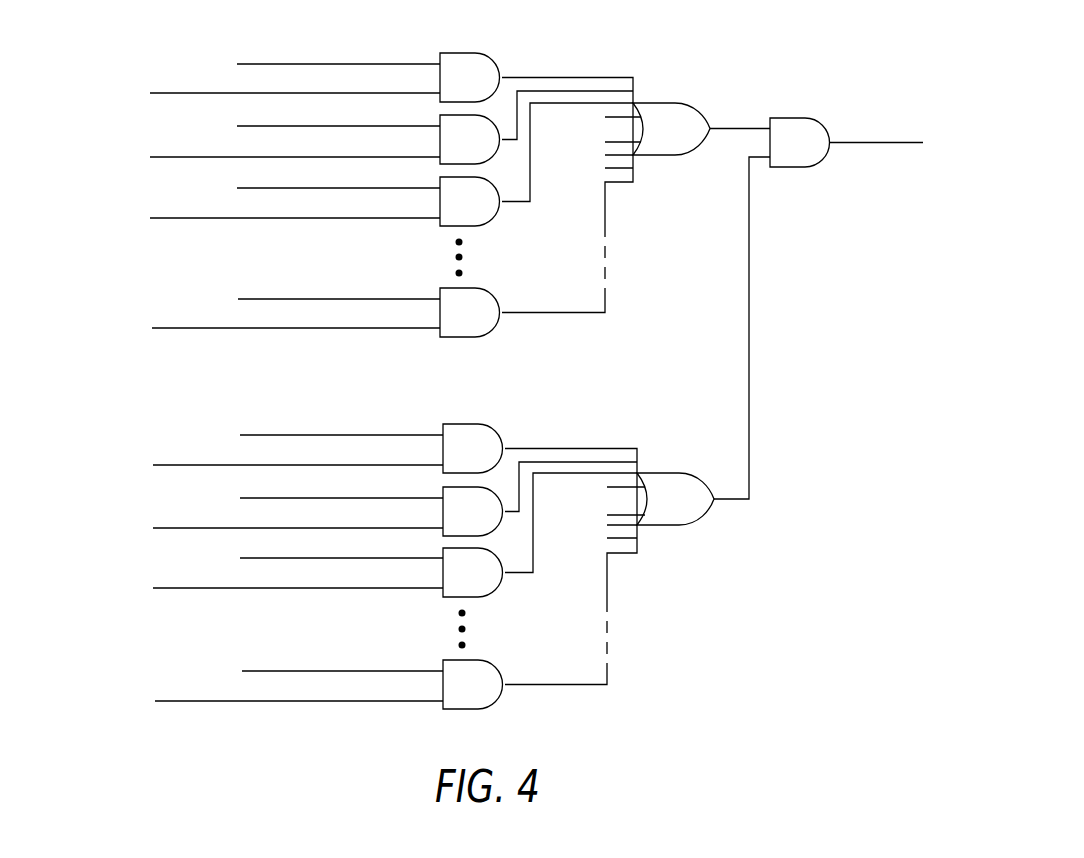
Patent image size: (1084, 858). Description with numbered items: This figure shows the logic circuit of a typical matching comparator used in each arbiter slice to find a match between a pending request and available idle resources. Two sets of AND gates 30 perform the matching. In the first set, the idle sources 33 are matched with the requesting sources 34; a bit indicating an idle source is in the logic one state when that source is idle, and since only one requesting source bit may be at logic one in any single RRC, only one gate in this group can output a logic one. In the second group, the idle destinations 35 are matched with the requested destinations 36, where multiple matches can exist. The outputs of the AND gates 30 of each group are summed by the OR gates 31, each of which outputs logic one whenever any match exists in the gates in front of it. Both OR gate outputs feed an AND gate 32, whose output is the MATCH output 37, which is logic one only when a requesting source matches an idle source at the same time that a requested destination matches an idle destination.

The AND gates 30 is at (498, 61).
The OR gates 31 is at (693, 103).
The AND gate 32 is at (818, 164).
The idle sources 33 is at (240, 64).
The requesting sources 34 is at (150, 93).
The idle destinations 35 is at (240, 435).
The requested destinations 36 is at (153, 465).
The MATCH output 37 is at (914, 142).